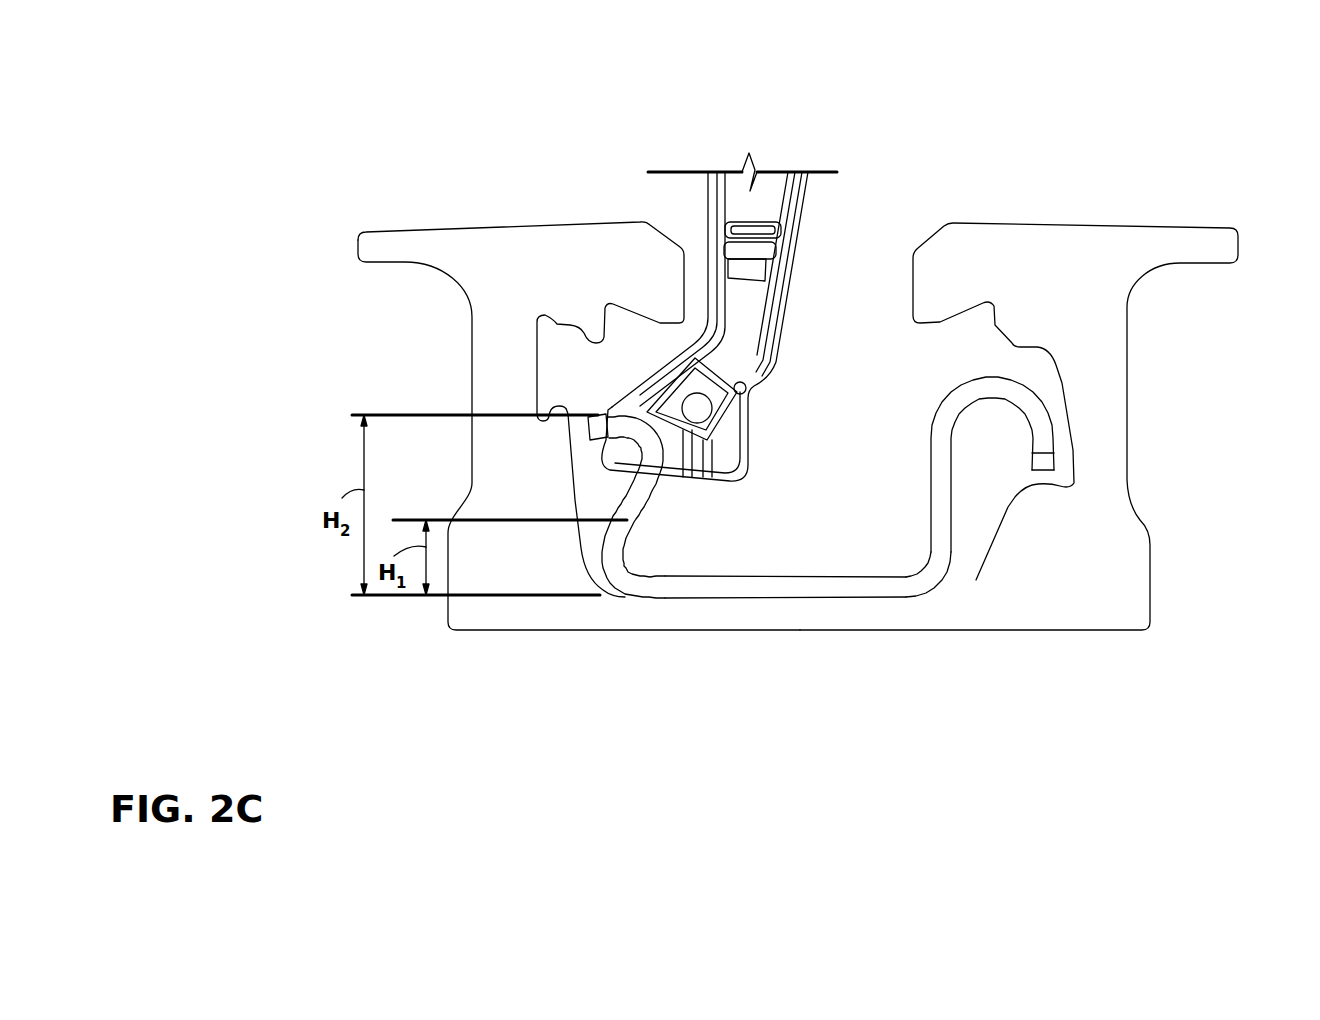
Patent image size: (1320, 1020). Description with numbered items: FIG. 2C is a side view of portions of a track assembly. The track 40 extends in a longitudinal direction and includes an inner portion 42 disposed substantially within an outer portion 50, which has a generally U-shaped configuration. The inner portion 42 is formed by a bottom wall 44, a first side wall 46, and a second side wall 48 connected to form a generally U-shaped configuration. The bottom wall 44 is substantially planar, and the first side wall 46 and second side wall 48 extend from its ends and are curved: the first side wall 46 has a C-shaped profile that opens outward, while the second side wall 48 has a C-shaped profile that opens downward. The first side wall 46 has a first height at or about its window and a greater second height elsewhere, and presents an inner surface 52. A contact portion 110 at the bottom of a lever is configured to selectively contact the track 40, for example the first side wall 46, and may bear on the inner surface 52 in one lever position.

The track 40 is at (1015, 153).
The inner portion 42 is at (962, 574).
The bottom wall 44 is at (798, 585).
The first side wall 46 is at (662, 500).
The second side wall 48 is at (924, 471).
The outer portion 50 is at (1153, 356).
The inner surface 52 is at (645, 512).
The contact portion 110 is at (793, 279).